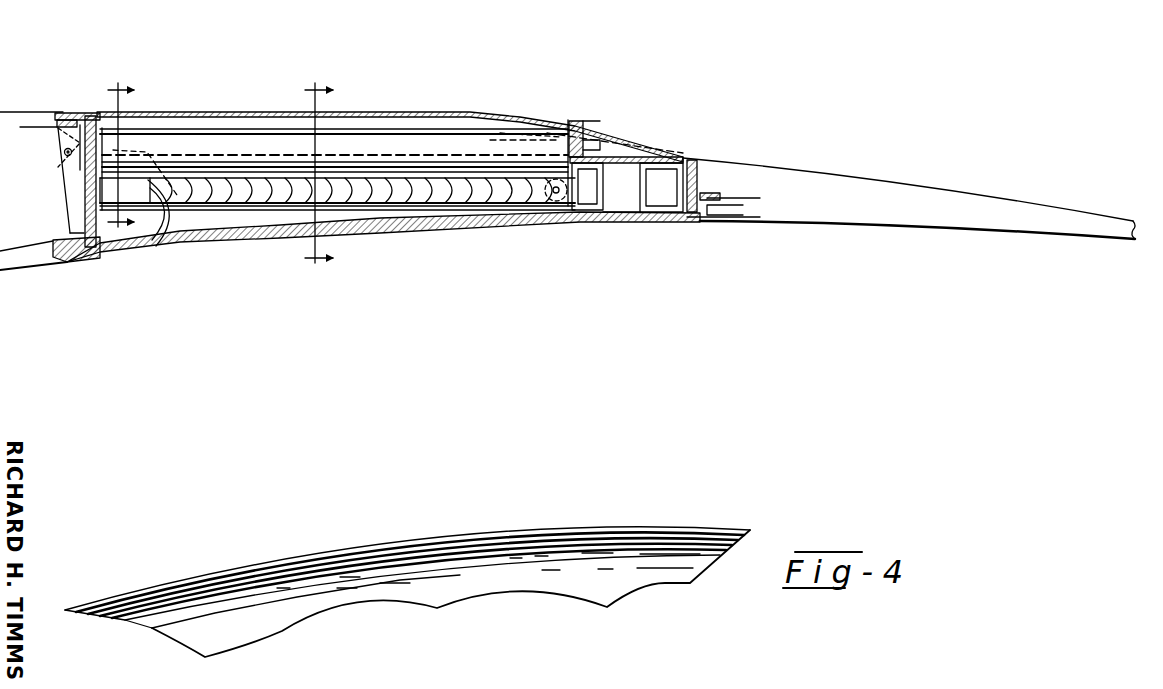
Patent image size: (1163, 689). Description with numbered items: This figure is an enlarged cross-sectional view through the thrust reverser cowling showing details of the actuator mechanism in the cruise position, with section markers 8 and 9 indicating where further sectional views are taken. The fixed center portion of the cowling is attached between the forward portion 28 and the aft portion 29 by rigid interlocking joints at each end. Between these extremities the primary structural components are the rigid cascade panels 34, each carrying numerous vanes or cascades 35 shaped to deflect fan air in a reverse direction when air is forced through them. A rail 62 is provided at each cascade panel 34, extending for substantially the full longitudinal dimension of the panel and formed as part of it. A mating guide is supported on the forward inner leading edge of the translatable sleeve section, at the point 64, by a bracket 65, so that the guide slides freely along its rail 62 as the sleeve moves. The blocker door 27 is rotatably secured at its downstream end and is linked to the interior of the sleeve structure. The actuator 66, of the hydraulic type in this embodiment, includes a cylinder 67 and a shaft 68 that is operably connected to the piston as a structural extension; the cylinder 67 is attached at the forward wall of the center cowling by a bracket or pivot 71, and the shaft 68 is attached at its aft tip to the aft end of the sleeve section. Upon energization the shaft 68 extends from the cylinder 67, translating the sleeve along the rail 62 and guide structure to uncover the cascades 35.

The blocker door 27 is at (500, 227).
The forward portion of the cowling 28 is at (38, 210).
The aft portion of the cowling 29 is at (830, 200).
The cascade panel 34 is at (158, 228).
The cascade vane 35 is at (433, 186).
The rail 62 is at (212, 180).
The guide mounting point on sleeve leading edge 64 is at (99, 117).
The bracket 65 is at (113, 147).
The actuator 66 is at (272, 127).
The cylinder 67 is at (395, 147).
The shaft 68 is at (574, 127).
The pivot 71 is at (58, 120).
The section line 8- 8 is at (130, 157).
The section line 9- 9 is at (332, 176).